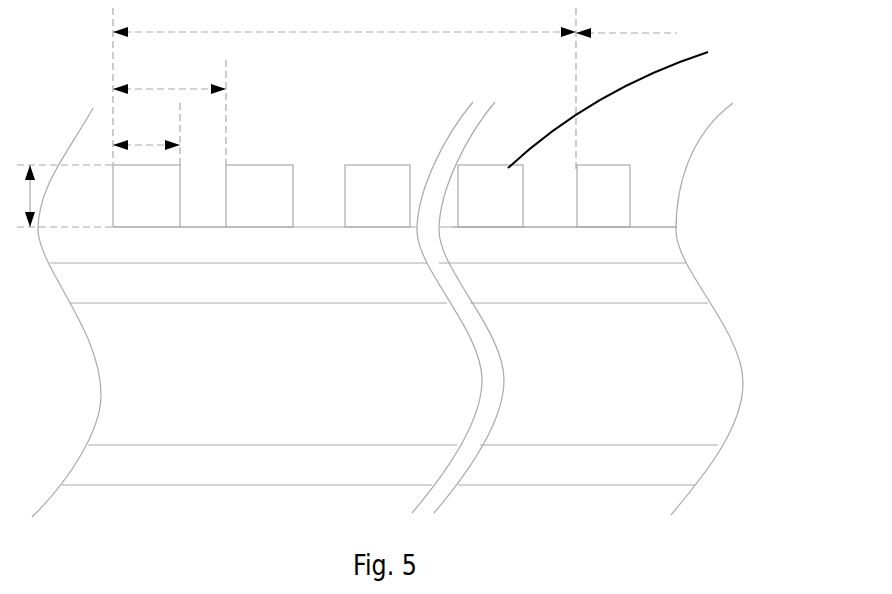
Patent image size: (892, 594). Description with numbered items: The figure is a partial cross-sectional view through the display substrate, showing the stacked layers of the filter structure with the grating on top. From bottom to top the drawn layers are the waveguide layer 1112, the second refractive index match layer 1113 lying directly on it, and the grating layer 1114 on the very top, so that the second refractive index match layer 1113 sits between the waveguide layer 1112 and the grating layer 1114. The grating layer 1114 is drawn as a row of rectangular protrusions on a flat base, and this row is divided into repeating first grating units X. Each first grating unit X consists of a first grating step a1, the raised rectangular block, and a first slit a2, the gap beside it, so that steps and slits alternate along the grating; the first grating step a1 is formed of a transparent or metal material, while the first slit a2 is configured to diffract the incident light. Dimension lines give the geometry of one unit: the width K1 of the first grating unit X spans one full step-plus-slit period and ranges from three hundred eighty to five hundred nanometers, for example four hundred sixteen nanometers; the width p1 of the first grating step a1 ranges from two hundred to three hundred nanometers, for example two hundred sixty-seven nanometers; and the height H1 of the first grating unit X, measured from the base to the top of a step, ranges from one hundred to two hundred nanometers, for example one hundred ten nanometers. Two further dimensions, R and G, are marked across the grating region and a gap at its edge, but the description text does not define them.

The grating layer 1114 is at (653, 190).
The second refractive index match layer 1113 is at (643, 244).
The waveguide layer 1112 is at (655, 282).
The first grating step a1 is at (147, 213).
The first slit a2 is at (213, 205).
The first grating unit X is at (168, 87).
The region width R is at (344, 17).
The gap width G is at (626, 19).
The width of the first grating unit K1 is at (169, 73).
The width of the first grating step p1 is at (146, 128).
The height of the first grating unit H1 is at (16, 196).